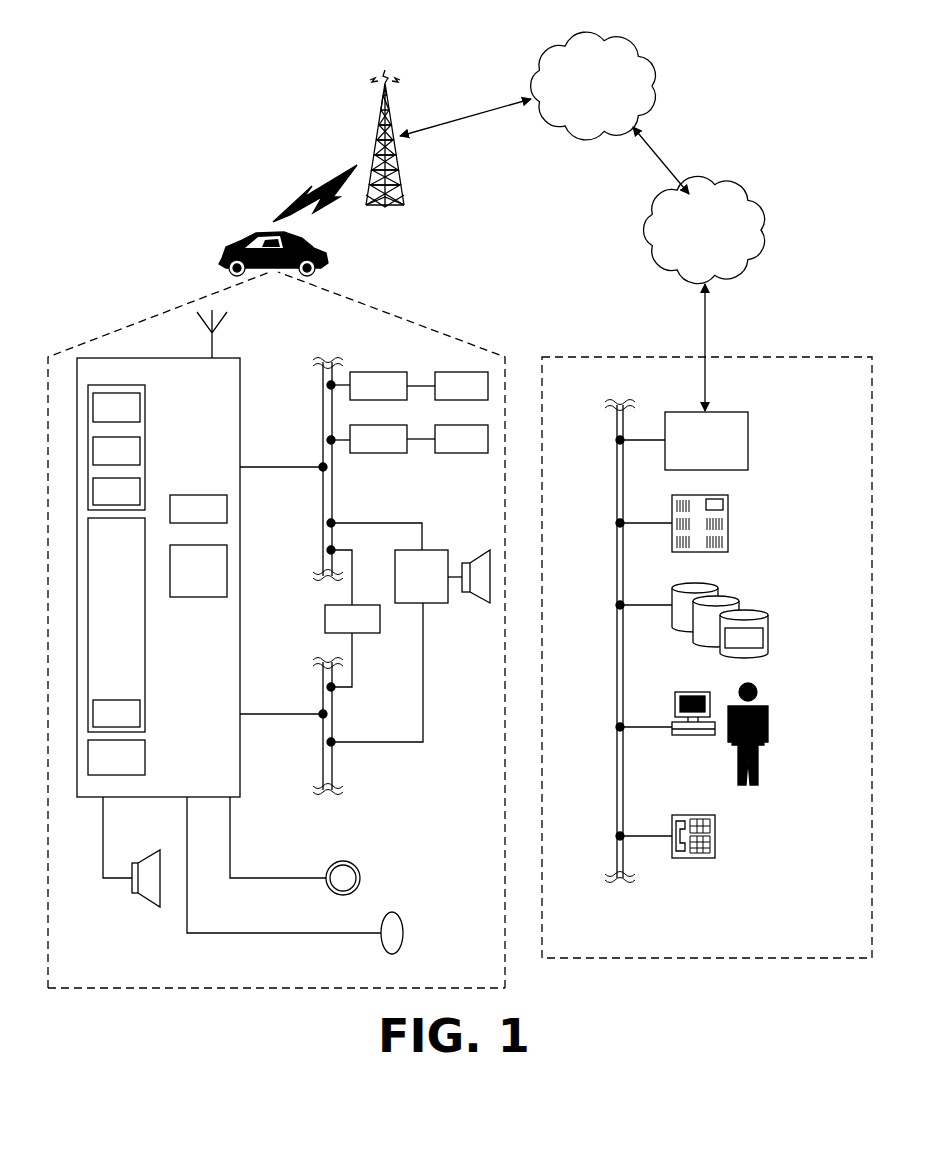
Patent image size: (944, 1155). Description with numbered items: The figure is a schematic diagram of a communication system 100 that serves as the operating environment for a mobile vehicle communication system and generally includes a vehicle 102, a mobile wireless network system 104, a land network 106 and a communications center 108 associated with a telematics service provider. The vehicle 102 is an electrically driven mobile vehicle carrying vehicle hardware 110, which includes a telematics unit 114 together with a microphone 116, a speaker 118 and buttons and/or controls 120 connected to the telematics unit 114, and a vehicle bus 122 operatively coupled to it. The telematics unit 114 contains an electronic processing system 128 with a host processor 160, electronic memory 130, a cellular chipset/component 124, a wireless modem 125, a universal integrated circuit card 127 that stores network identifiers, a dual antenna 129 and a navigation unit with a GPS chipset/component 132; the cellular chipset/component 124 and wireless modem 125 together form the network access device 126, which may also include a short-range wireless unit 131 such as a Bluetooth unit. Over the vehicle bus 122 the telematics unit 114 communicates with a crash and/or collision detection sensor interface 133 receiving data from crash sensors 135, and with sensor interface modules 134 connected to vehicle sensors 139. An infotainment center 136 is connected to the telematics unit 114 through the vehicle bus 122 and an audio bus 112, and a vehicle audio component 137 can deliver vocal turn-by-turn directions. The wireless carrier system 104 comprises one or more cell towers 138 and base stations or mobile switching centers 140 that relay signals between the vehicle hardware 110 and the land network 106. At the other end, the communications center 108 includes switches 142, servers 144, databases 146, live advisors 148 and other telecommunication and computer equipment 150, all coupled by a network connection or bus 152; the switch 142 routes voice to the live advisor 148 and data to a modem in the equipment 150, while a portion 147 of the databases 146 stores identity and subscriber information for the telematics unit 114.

The communication system 100 is at (432, 28).
The vehicle 102 is at (225, 250).
The mobile wireless network system 104 is at (505, 191).
The land network 106 is at (704, 229).
The communications center 108 is at (706, 960).
The vehicle hardware 110 is at (242, 990).
The audio bus 112 is at (323, 762).
The telematics unit 114 is at (191, 552).
The microphone 116 is at (396, 912).
The speaker 118 is at (145, 898).
The buttons and/or controls 120 is at (340, 862).
The vehicle bus 122 is at (333, 510).
The cellular chipset/component 124 is at (116, 407).
The wireless modem 125 is at (116, 451).
The network access device 126 is at (147, 408).
The universal integrated circuit card 127 is at (116, 491).
The electronic processing system 128 is at (116, 625).
The dual antenna 129 is at (216, 354).
The electronic memory 130 is at (116, 757).
The short-range wireless unit 131 is at (198, 571).
The GPS chipset/component 132 is at (198, 509).
The crash and/or collision detection sensor interface 133 is at (378, 386).
The sensor interface modules 134 is at (378, 439).
The crash sensors 135 is at (461, 386).
The infotainment center 136 is at (352, 619).
The vehicle audio component 137 is at (442, 576).
The cell tower 138 is at (389, 113).
The vehicle sensors 139 is at (461, 439).
The mobile switching center 140 is at (593, 86).
The switch 142 is at (706, 441).
The server 144 is at (730, 500).
The databases 146 is at (746, 605).
The portion of the databases 147 is at (744, 638).
The live advisor 148 is at (763, 700).
The telecommunication and computer equipment 150 is at (718, 828).
The network connection or bus 152 is at (617, 655).
The host processor 160 is at (116, 713).